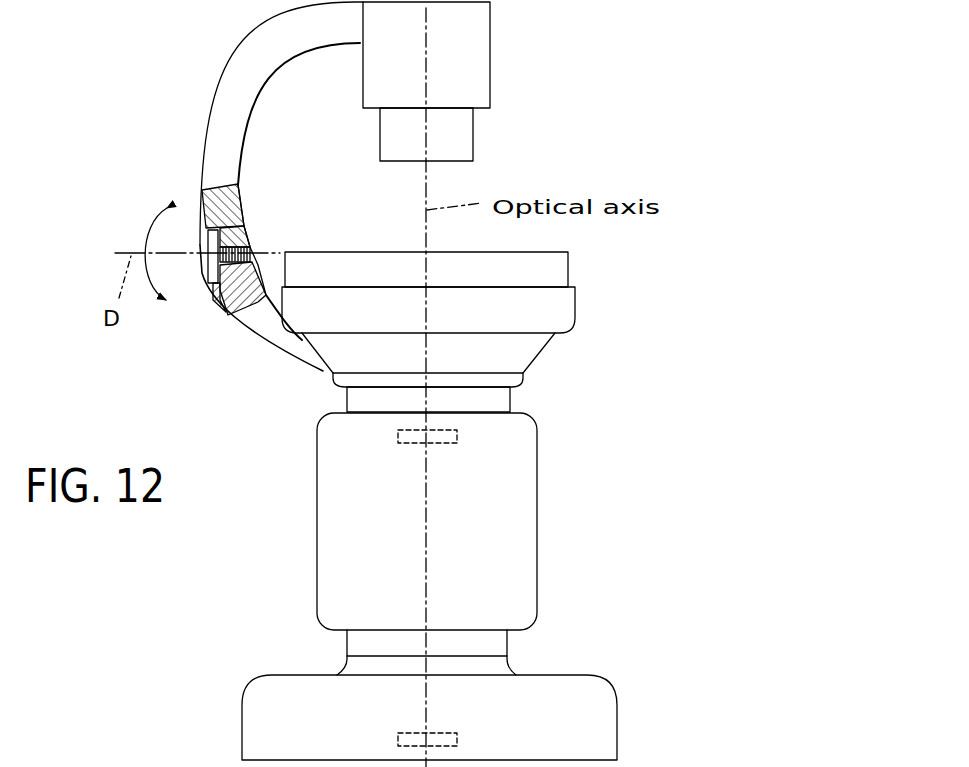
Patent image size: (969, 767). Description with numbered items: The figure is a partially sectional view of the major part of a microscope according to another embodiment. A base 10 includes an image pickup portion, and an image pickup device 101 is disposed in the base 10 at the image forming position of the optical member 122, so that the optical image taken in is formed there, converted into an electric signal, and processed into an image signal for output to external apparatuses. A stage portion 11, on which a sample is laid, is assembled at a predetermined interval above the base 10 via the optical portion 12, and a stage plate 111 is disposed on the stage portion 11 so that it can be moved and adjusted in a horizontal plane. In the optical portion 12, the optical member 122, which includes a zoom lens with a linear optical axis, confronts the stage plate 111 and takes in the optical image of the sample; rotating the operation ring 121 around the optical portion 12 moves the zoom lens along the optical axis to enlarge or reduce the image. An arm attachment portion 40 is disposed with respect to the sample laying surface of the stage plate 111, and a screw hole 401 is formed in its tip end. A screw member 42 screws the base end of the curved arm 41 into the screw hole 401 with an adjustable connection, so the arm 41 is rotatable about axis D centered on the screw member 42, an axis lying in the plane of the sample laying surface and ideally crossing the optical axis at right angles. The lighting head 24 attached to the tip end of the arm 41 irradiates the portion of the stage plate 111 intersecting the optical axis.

The base 10 is at (468, 717).
The image pickup device 101 is at (457, 740).
The stage portion 11 is at (475, 319).
The stage plate 111 is at (568, 265).
The optical portion 12 is at (464, 530).
The operation ring 121 is at (537, 528).
The optical member 122 is at (457, 437).
The lighting head 24 is at (490, 52).
The arm attachment portion 40 is at (275, 352).
The screw hole 401 is at (247, 250).
The arm 41 is at (218, 98).
The screw member 42 is at (204, 284).